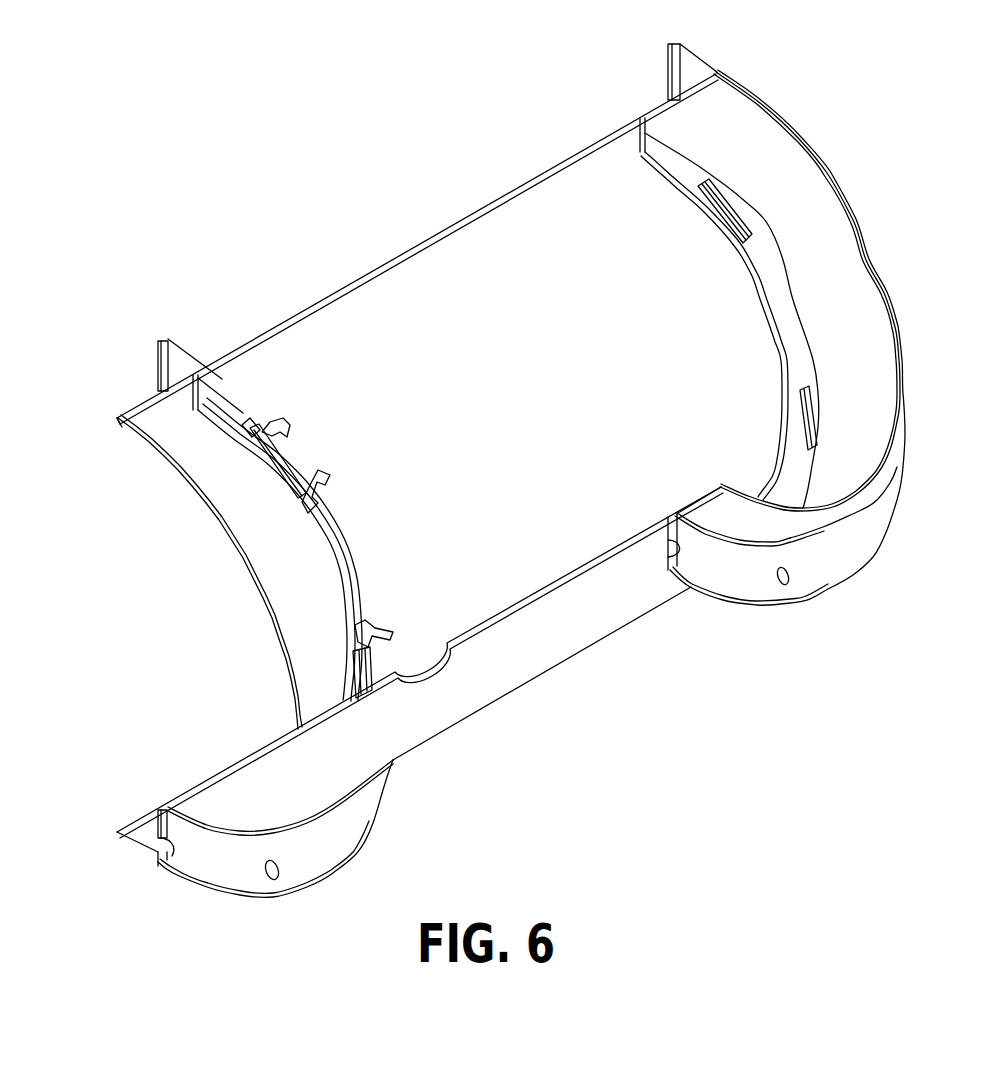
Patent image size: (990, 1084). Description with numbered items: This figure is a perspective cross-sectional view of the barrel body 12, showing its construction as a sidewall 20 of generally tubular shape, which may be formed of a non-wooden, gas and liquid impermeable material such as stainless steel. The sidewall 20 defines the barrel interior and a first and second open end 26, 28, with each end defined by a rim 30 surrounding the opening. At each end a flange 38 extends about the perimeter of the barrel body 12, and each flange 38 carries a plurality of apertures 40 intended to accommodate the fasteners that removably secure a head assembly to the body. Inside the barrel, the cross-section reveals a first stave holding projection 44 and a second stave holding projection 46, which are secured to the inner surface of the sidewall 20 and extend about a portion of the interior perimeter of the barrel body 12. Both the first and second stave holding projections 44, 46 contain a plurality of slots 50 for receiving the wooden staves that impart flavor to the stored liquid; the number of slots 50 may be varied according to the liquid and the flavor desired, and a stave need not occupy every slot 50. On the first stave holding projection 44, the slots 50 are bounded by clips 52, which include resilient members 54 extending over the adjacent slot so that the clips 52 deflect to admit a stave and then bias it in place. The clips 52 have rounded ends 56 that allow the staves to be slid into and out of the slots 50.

The barrel body 12 is at (301, 148).
The sidewall 20 is at (407, 252).
The first open end 26 is at (840, 265).
The second open end 28 is at (229, 617).
The rim 30 is at (133, 440).
The flange 38 is at (858, 533).
The apertures 40 is at (789, 575).
The first stave holding projection 44 is at (216, 405).
The second stave holding projection 46 is at (652, 146).
The slots 50 is at (286, 457).
The clips 52 is at (327, 501).
The resilient members 54 is at (253, 420).
The rounded ends 56 is at (288, 420).